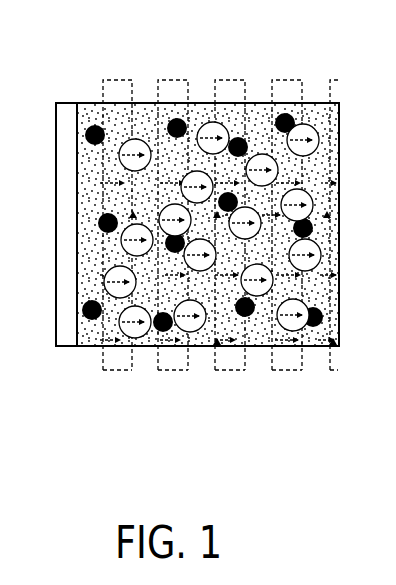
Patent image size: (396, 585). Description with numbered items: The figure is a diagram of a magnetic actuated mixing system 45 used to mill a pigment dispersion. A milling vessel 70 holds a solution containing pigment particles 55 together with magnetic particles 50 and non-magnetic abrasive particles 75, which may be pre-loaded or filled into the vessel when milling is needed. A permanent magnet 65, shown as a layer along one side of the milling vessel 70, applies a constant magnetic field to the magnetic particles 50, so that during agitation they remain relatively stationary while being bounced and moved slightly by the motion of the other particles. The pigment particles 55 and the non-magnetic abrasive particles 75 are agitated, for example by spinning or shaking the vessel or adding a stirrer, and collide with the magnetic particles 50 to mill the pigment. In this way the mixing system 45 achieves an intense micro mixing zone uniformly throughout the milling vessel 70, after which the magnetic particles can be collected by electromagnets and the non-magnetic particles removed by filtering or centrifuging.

The mixing system 45 is at (172, 263).
The magnetic particles 50 is at (212, 130).
The pigment particles 55 is at (183, 345).
The permanent magnet 65 is at (63, 228).
The milling vessel 70 is at (94, 103).
The non-magnetic abrasive particles 75 is at (82, 134).